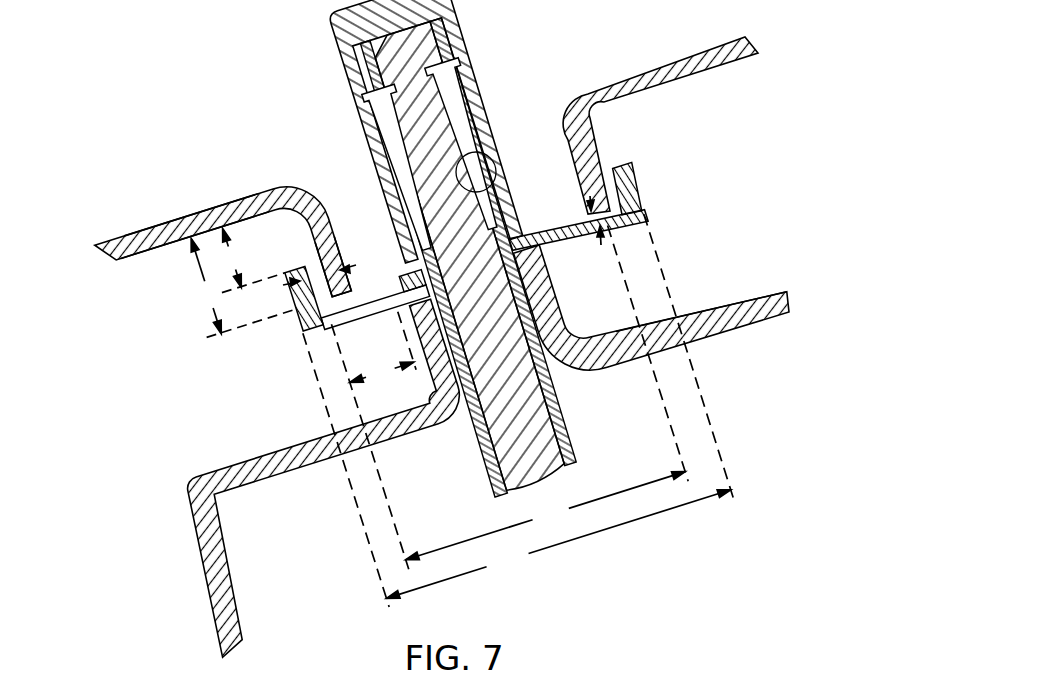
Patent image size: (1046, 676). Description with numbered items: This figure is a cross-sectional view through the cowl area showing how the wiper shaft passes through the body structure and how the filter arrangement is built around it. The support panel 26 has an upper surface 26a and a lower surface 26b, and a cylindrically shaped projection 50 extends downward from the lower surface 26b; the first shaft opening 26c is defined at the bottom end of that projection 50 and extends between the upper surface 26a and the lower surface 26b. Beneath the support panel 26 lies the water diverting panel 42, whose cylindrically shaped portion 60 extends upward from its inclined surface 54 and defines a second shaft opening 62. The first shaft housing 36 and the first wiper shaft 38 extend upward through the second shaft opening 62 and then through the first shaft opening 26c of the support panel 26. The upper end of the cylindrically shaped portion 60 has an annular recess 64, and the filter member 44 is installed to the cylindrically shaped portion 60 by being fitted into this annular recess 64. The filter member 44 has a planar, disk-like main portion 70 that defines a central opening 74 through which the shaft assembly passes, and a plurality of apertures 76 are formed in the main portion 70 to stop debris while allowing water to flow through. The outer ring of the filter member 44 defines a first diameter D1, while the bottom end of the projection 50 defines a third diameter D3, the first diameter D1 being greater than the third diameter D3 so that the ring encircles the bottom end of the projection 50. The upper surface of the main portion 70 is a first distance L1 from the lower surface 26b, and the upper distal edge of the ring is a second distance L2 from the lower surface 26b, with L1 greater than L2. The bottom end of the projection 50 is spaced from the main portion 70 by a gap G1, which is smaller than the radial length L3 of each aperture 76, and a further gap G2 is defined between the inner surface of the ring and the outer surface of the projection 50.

The support panel 26 is at (135, 232).
The upper surface 26a is at (208, 205).
The lower surface 26b is at (143, 253).
The first shaft opening 26c is at (348, 275).
The first shaft housing 36 is at (560, 437).
The first wiper shaft 38 is at (427, 136).
The water diverting panel 42 is at (748, 305).
The filter member 44 is at (645, 212).
The cylindrically shaped projection 50 is at (588, 162).
The inclined surface 54 is at (262, 467).
The cylindrically shaped portion 60 is at (547, 302).
The second shaft opening 62 is at (476, 150).
The annular recess 64 is at (524, 238).
The main portion 70 is at (372, 304).
The central opening 74 is at (412, 290).
The apertures 76 is at (349, 306).
The first diameter D1 is at (517, 411).
The third diameter D3 is at (508, 398).
The first distance L1 is at (245, 254).
The second distance L2 is at (237, 277).
The length of aperture L3 is at (375, 351).
The gap G1 is at (601, 243).
The gap G2 is at (312, 277).